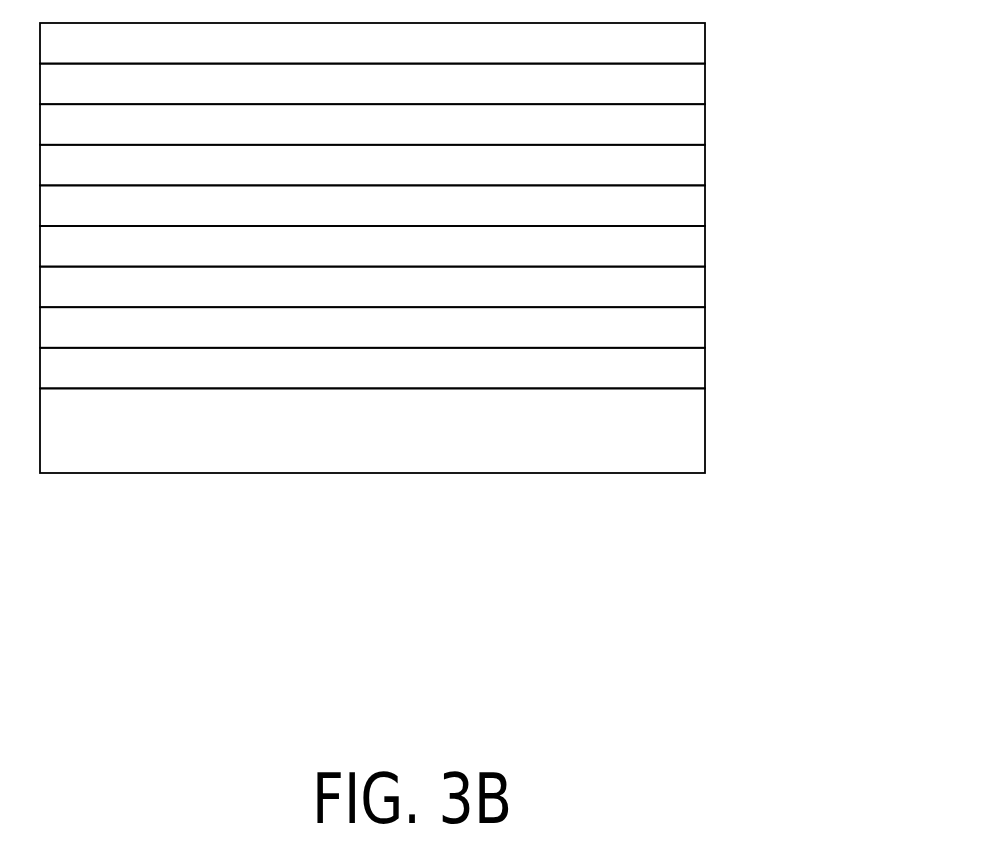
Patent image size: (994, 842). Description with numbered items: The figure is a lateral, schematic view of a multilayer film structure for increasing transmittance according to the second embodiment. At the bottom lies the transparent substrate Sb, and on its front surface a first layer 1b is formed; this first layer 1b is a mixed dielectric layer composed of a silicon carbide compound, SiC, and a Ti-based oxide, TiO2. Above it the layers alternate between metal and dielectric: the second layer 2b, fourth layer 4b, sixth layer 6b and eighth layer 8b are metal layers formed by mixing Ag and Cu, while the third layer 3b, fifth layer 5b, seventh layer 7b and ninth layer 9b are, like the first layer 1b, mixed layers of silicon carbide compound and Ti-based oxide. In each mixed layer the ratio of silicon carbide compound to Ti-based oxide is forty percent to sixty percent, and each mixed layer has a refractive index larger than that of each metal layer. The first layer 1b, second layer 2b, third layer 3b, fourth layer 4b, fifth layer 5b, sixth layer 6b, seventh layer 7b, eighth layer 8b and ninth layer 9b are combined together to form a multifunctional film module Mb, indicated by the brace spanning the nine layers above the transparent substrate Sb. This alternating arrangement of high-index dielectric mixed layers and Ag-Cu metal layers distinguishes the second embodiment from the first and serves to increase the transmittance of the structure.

The first layer 1b is at (685, 377).
The second layer 2b is at (685, 336).
The third layer 3b is at (685, 295).
The fourth layer 4b is at (685, 254).
The fifth layer 5b is at (685, 214).
The sixth layer 6b is at (685, 173).
The seventh layer 7b is at (685, 132).
The eighth layer 8b is at (685, 92).
The ninth layer 9b is at (685, 51).
The transparent substrate Sb is at (685, 440).
The multifunctional film module Mb is at (830, 50).